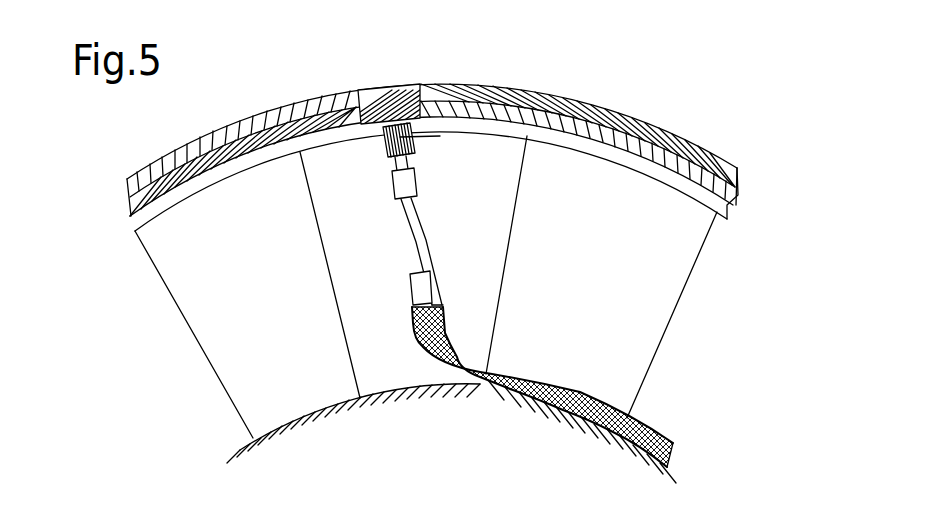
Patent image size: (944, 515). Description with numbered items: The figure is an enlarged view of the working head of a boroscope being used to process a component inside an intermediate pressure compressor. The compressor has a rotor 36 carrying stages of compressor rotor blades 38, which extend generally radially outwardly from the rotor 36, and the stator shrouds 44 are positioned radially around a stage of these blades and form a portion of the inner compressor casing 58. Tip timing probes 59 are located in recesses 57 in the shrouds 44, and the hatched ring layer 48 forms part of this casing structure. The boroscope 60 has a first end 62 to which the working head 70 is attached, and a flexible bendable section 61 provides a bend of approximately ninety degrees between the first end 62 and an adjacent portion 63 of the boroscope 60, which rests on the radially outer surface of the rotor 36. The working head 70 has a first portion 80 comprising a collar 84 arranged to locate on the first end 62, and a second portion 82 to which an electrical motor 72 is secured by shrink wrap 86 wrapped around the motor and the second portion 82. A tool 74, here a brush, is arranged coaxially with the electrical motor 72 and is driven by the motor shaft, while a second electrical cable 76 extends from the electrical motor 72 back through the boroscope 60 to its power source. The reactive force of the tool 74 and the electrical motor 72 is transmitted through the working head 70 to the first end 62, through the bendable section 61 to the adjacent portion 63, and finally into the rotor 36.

The rotor 36 is at (287, 427).
The compressor rotor blades 38 is at (200, 302).
The shrouds 44 is at (667, 148).
The ring layer 48 is at (597, 137).
The recesses 57 is at (397, 84).
The inner compressor casing 58 is at (717, 160).
The tip timing probes 59 is at (343, 117).
The boroscope 60 is at (605, 391).
The bendable section 61 is at (430, 367).
The first end 62 is at (408, 306).
The adjacent portion 63 is at (523, 373).
The working head 70 is at (430, 226).
The electrical motor 72 is at (412, 181).
The tool 74 is at (423, 138).
The second electrical cable 76 is at (399, 208).
The first portion 80 is at (413, 279).
The second portion 82 is at (413, 191).
The collar 84 is at (431, 278).
The shrink wrap 86 is at (407, 183).